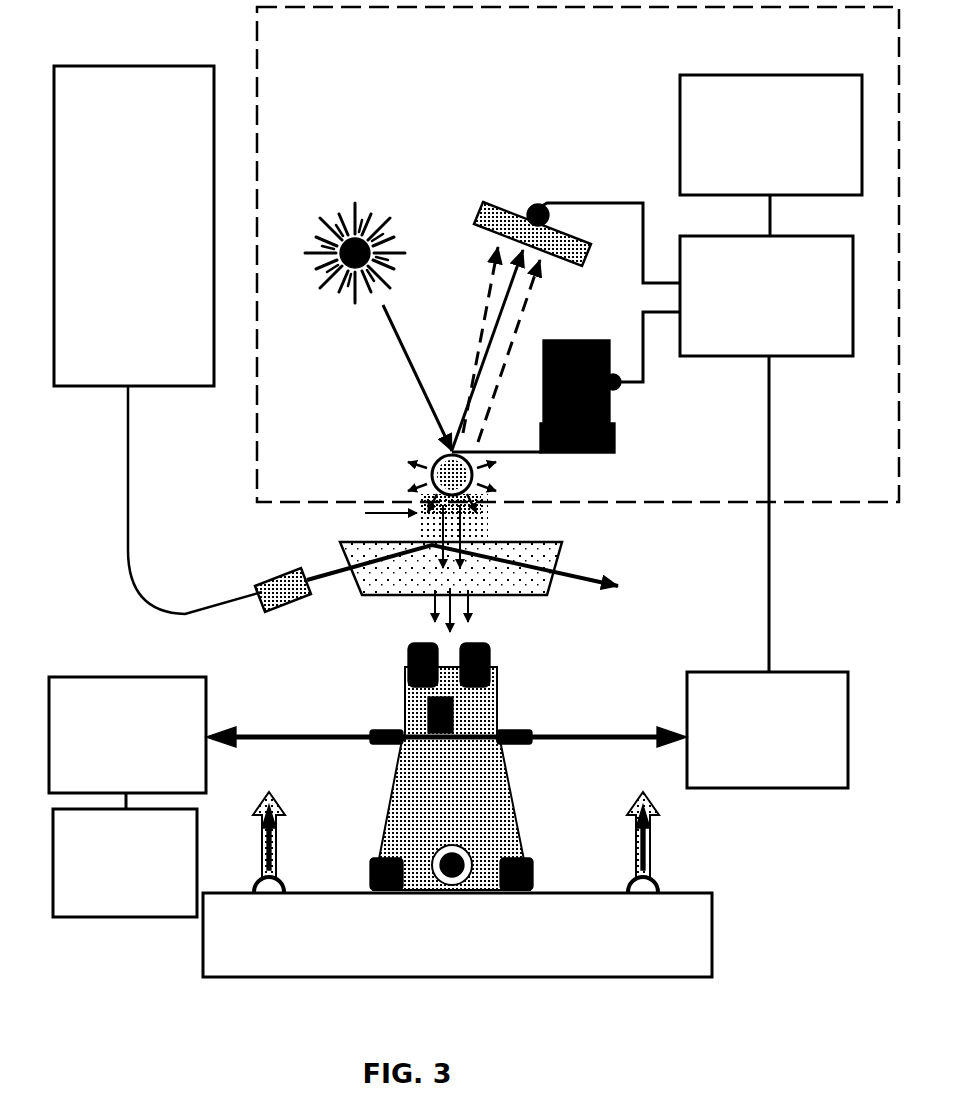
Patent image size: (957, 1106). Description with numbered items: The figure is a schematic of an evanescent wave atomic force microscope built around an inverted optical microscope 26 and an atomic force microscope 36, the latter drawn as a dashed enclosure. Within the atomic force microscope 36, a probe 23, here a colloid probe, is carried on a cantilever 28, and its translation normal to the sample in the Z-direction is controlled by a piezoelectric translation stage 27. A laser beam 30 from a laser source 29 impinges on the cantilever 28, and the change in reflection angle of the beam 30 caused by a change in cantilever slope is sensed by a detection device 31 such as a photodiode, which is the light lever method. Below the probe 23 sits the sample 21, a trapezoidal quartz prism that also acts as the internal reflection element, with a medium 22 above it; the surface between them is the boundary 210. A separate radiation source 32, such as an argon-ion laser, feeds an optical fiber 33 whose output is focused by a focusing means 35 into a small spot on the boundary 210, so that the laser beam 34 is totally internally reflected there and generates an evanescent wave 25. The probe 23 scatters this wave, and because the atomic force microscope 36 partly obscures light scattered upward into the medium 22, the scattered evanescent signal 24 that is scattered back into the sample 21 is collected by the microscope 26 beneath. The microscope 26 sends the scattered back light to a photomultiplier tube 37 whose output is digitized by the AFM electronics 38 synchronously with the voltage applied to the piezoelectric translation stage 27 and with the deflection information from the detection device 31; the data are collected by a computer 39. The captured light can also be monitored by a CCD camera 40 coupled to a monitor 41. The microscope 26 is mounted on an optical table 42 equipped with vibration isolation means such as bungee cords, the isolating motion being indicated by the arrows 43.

The sample 21 is at (510, 587).
The medium 22 is at (521, 490).
The probe 23 is at (430, 457).
The scattered evanescent signal 24 is at (429, 610).
The evanescent wave 25 is at (373, 516).
The optical microscope 26 is at (392, 817).
The piezoelectric translation stage 27 is at (610, 382).
The cantilever 28 is at (496, 438).
The laser source 29 is at (333, 253).
The laser beam 30 is at (418, 384).
The detection device 31 is at (468, 226).
The radiation source 32 is at (117, 239).
The optical fiber 33 is at (136, 483).
The laser beam 34 is at (340, 587).
The focusing means 35 is at (282, 568).
The atomic force microscope 36 is at (427, 51).
The photomultiplier tube 37 is at (751, 745).
The AFM electronics 38 is at (751, 309).
The computer 39 is at (756, 149).
The CCD camera 40 is at (111, 748).
The monitor 41 is at (109, 876).
The optical table 42 is at (442, 946).
The vibration direction 43 is at (692, 829).
The boundary 210 is at (536, 540).